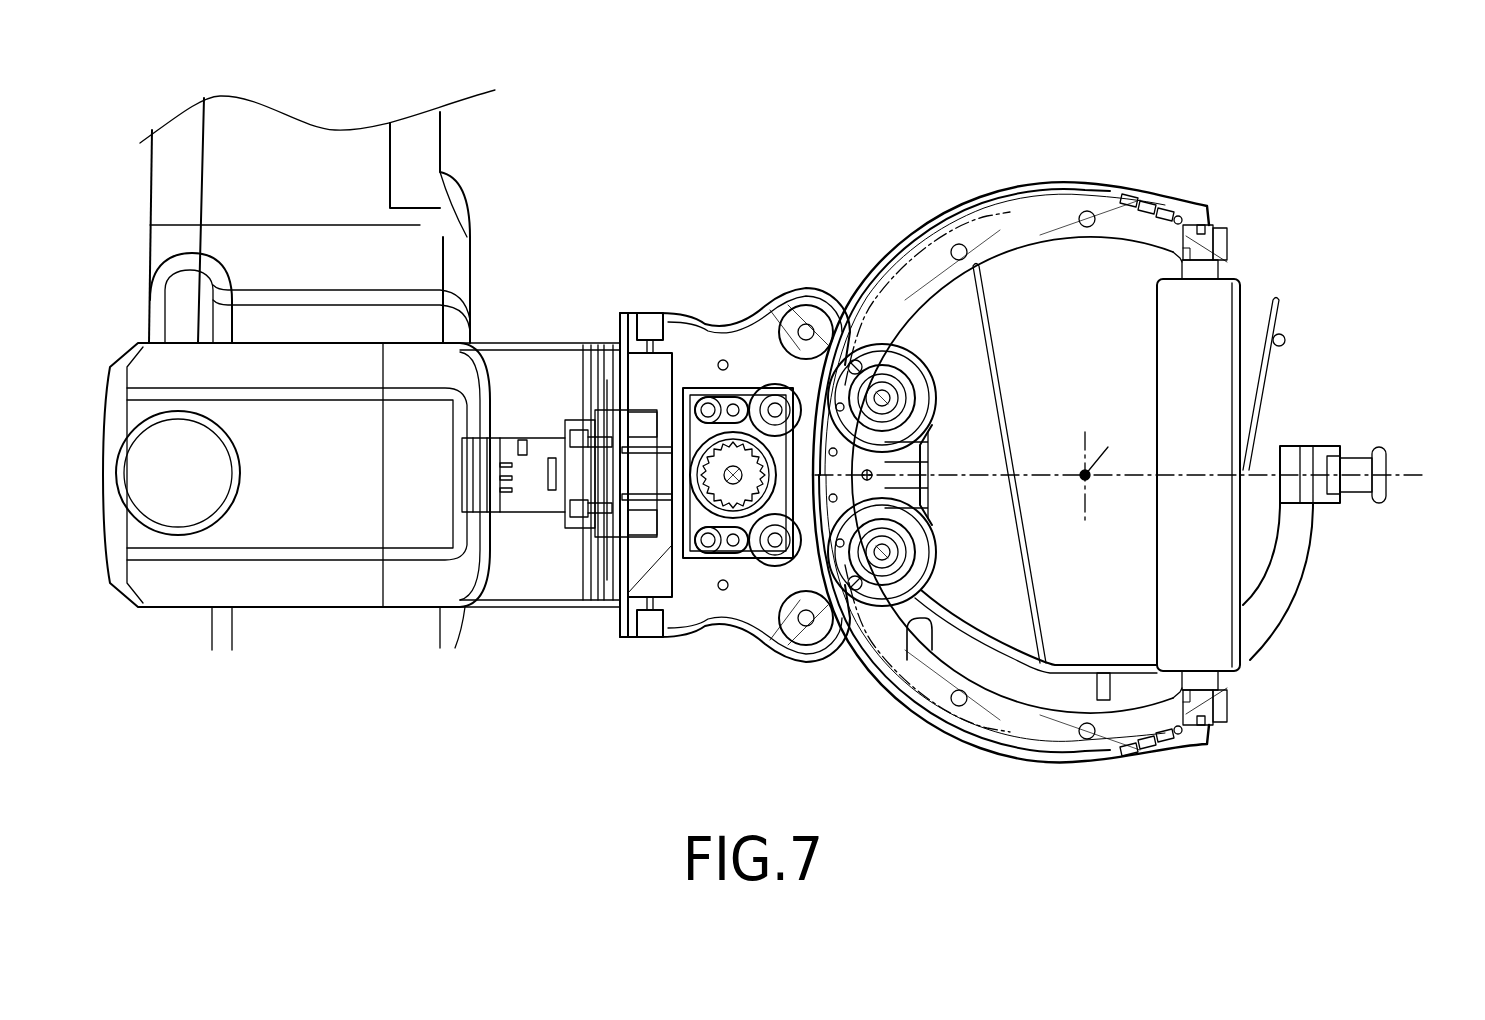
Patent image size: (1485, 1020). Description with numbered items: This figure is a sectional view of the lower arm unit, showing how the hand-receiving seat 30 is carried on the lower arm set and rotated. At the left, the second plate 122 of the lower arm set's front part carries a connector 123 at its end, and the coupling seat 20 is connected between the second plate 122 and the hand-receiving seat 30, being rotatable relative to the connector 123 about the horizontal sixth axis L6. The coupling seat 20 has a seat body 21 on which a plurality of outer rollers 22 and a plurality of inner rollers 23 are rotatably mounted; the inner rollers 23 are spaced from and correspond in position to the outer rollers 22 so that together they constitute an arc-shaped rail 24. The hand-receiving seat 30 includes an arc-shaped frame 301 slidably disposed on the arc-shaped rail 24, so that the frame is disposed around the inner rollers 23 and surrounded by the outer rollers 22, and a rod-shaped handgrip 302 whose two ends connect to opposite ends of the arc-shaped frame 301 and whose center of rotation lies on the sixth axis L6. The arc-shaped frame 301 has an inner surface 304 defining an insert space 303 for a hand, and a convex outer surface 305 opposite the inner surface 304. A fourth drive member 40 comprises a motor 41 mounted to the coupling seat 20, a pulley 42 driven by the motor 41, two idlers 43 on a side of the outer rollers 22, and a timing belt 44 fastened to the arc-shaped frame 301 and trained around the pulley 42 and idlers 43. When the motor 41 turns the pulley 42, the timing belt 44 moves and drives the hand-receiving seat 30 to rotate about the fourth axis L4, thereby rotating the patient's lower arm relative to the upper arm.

The second plate 122 is at (585, 340).
The connector 123 is at (613, 477).
The coupling seat 20 is at (672, 322).
The seat body 21 is at (706, 475).
The fourth drive member 40 is at (728, 402).
The motor 41 is at (723, 400).
The pulley 42 is at (737, 455).
The idlers 43 is at (776, 385).
The outer rollers 22 is at (806, 322).
The inner rollers 23 is at (912, 335).
The arc-shaped rail 24 is at (848, 322).
The timing belt 44 is at (933, 222).
The hand-receiving seat 30 is at (1105, 190).
The arc-shaped frame 301 is at (1025, 230).
The handgrip 302 is at (1203, 310).
The insert space 303 is at (1117, 604).
The inner surface 304 is at (927, 640).
The outer surface 305 is at (993, 220).
The fourth axis L4 is at (1108, 447).
The sixth axis L6 is at (1142, 473).